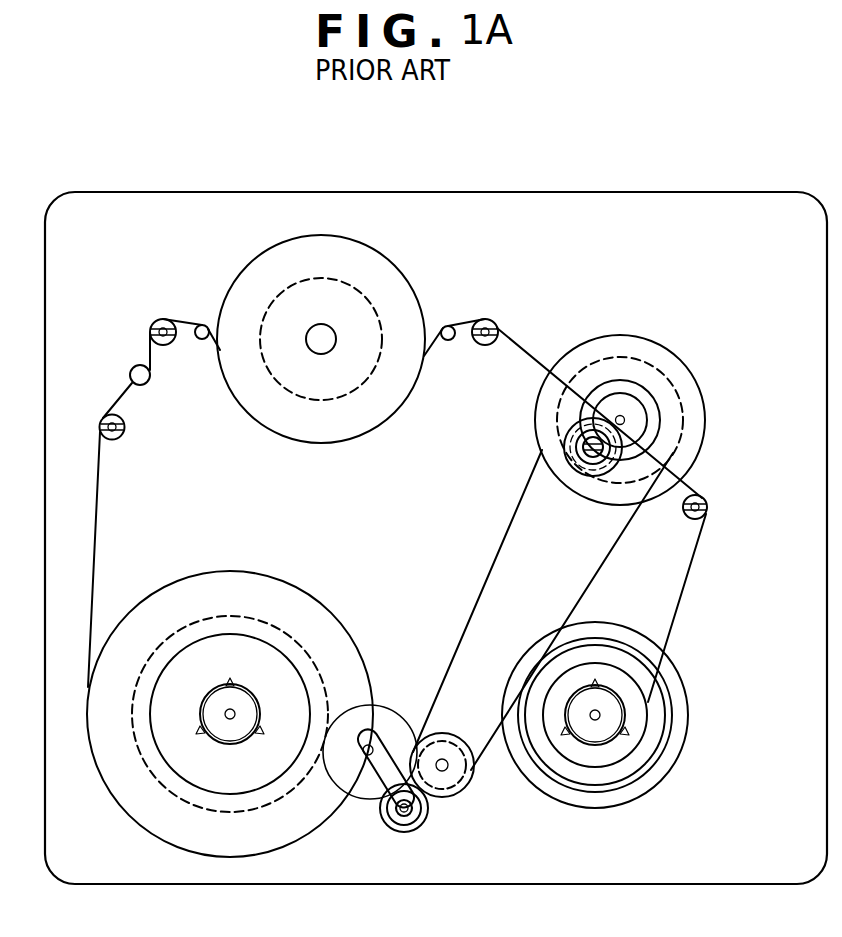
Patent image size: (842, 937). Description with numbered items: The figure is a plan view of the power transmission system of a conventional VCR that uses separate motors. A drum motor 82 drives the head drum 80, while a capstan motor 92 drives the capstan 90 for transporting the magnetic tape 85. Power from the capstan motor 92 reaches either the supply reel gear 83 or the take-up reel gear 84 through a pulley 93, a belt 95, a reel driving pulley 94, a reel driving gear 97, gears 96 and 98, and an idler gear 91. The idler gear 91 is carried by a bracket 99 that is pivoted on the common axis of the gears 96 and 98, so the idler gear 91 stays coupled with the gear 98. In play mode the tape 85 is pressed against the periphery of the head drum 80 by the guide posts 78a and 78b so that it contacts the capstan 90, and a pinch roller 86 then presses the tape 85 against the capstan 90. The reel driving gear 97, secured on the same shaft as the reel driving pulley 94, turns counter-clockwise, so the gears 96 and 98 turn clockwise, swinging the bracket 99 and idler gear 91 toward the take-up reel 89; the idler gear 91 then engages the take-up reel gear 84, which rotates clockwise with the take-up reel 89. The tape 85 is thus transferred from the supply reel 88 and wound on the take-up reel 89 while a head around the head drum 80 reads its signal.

The guide post 78a is at (200, 341).
The guide post 78b is at (479, 343).
The head drum 80 is at (403, 270).
The drum motor 82 is at (280, 297).
The supply reel gear 83 is at (162, 783).
The take-up reel gear 84 is at (620, 808).
The magnetic tape 85 is at (93, 530).
The pinch roller 86 is at (582, 476).
The supply reel 88 is at (247, 638).
The take-up reel 89 is at (647, 765).
The capstan 90 is at (617, 414).
The idler gear 91 is at (388, 712).
The capstan motor 92 is at (705, 419).
The pulley 93 is at (662, 380).
The reel driving pulley 94 is at (461, 734).
The belt 95 is at (478, 606).
The gear 96 is at (423, 820).
The reel driving gear 97 is at (466, 792).
The gear 98 is at (404, 816).
The bracket 99 is at (372, 782).